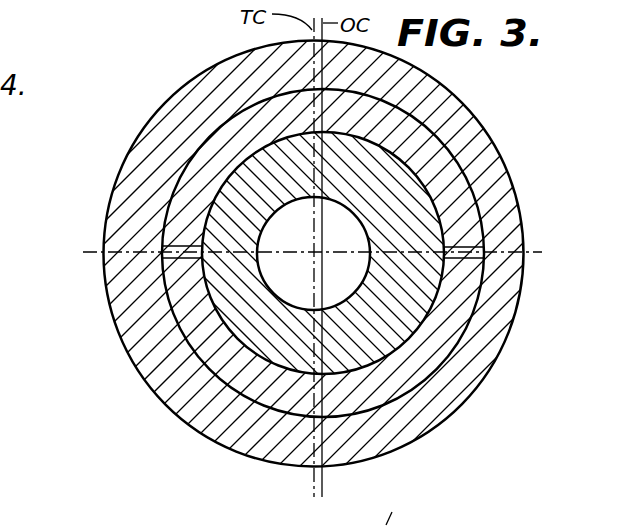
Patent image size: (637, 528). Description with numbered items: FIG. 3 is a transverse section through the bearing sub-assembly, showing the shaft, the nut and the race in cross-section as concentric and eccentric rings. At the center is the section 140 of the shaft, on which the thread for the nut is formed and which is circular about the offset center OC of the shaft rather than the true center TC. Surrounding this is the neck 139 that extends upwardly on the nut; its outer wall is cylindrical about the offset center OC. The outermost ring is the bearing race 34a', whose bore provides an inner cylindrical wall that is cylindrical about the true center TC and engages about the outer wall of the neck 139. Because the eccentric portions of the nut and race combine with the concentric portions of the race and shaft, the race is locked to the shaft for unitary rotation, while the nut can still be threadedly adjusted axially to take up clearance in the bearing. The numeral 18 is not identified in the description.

The bearing race 34a' is at (263, 254).
The neck 139 is at (407, 132).
The inner bore surface 18 is at (218, 306).
The section of the shaft 140 is at (387, 298).